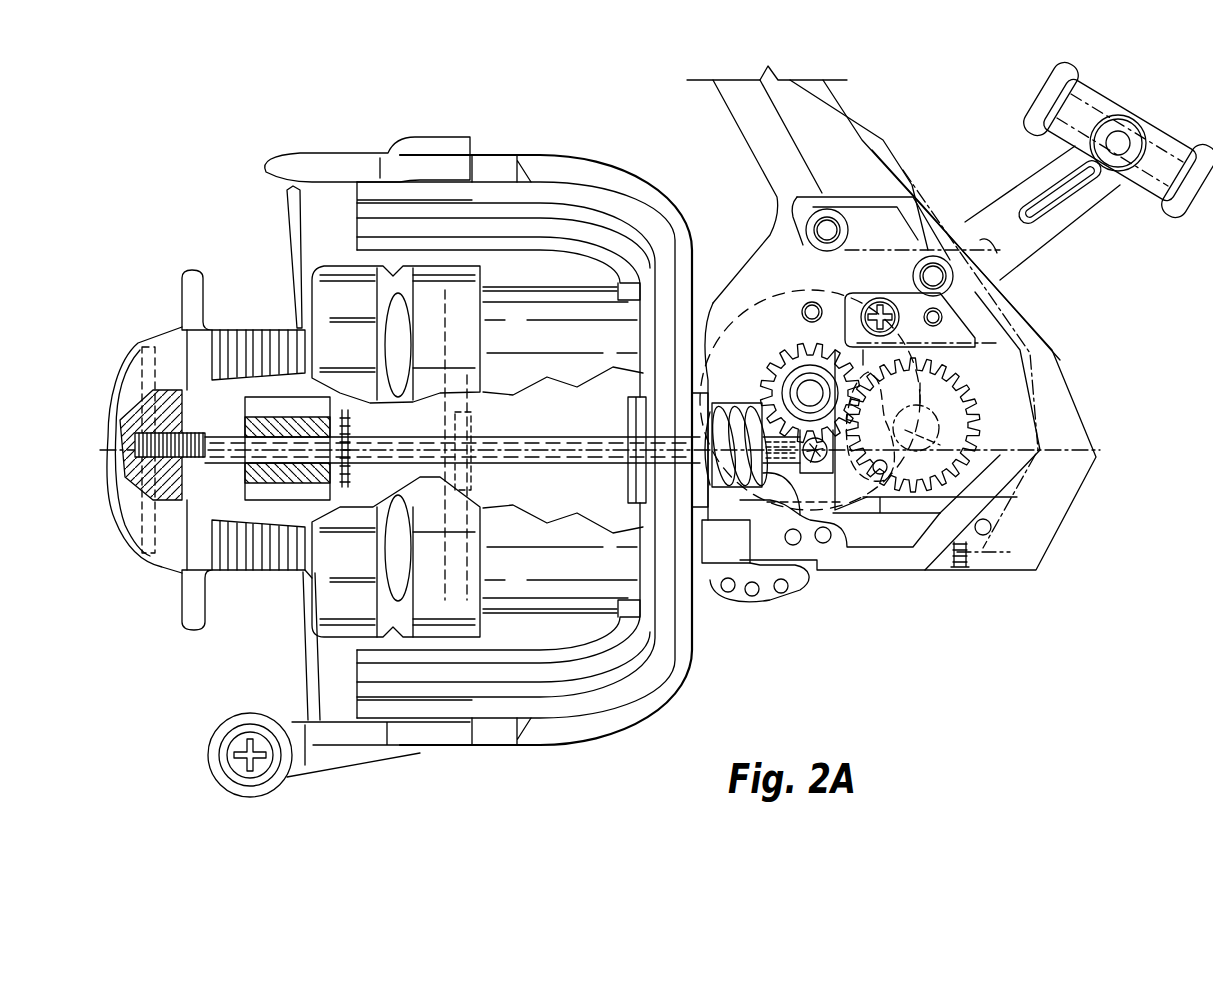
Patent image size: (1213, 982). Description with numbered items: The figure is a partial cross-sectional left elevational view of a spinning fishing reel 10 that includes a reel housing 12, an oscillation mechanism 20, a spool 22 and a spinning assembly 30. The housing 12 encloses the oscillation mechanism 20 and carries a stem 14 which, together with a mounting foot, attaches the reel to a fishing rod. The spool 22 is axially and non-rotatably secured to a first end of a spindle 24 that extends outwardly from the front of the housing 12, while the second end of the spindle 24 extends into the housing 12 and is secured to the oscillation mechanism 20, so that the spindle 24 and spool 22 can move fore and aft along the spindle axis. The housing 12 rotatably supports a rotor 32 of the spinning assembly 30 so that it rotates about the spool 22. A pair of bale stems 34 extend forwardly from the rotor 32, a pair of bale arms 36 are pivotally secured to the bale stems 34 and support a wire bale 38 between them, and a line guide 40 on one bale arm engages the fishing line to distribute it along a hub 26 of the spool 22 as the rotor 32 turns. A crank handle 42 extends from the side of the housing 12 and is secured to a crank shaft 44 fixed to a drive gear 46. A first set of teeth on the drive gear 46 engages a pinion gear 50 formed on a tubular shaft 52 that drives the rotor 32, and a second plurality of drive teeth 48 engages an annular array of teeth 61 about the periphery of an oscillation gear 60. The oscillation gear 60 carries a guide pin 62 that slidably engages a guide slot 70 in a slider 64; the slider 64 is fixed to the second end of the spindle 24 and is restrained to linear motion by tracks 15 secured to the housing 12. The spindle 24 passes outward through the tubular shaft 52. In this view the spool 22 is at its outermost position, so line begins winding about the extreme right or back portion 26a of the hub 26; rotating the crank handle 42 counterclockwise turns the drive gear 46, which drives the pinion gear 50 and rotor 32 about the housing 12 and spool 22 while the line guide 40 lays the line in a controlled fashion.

The spinning fishing reel 10 is at (982, 104).
The reel housing 12 is at (1008, 575).
The stem 14 is at (848, 100).
The tracks 15 is at (946, 340).
The oscillation mechanism 20 is at (898, 503).
The spool 22 is at (181, 270).
The spindle 24 is at (566, 465).
The hub 26 is at (250, 572).
The extreme right (back) portion of hub 26a is at (300, 580).
The spinning assembly 30 is at (677, 180).
The rotor 32 is at (700, 642).
The bale stems 34 is at (560, 154).
The bale arms 36 is at (364, 152).
The wire bale 38 is at (290, 242).
The line guide 40 is at (203, 762).
The crank handle 42 is at (1150, 130).
The crank shaft 44 is at (792, 356).
The drive gear 46 is at (768, 282).
The second plurality of drive teeth 48 is at (822, 344).
The pinion gear 50 is at (733, 492).
The tubular shaft 52 is at (791, 546).
The oscillation gear 60 is at (972, 380).
The annular array of teeth 61 is at (972, 400).
The guide pin 62 is at (972, 430).
The slider 64 is at (818, 505).
The guide slot 70 is at (958, 461).